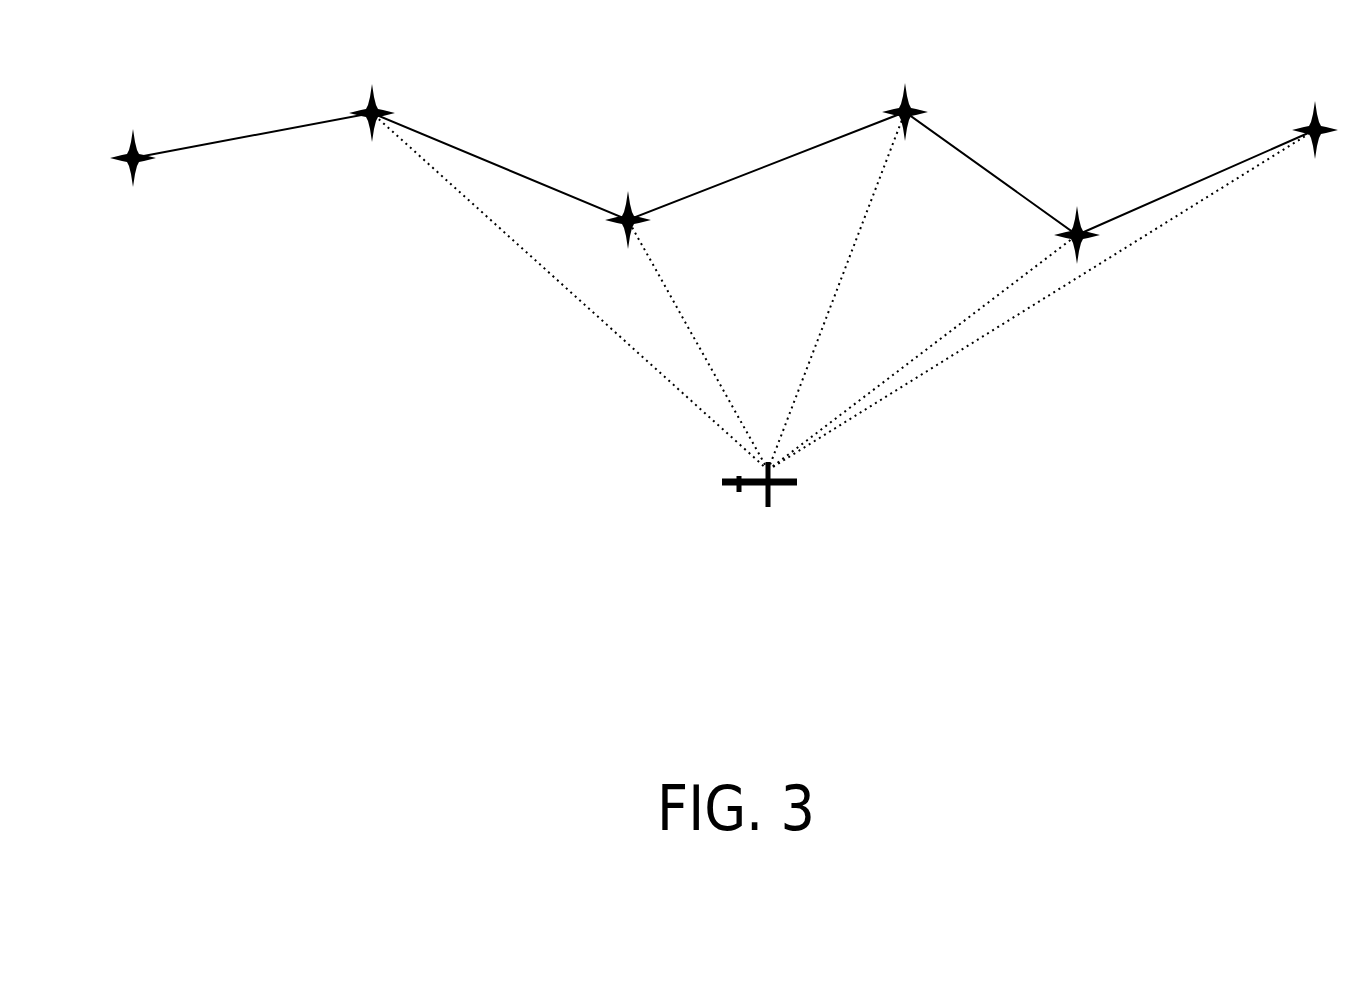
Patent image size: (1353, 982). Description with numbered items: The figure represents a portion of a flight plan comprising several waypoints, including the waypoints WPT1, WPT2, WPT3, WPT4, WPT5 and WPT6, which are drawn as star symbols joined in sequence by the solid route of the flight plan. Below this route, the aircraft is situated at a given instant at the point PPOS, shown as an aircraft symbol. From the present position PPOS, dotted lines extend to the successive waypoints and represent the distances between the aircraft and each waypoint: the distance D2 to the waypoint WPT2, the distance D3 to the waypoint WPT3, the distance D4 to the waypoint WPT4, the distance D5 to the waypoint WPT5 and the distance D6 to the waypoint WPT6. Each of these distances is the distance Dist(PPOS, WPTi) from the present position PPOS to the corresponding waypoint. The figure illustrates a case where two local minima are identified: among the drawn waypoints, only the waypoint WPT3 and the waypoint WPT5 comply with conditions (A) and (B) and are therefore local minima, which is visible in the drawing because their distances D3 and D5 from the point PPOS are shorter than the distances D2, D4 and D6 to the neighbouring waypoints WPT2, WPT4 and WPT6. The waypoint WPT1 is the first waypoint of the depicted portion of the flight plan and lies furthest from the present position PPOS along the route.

The waypoint WPT1 is at (119, 138).
The waypoint WPT2 is at (371, 102).
The waypoint WPT3 is at (632, 196).
The waypoint WPT4 is at (912, 96).
The waypoint WPT5 is at (1089, 220).
The waypoint WPT6 is at (1309, 114).
The distance D2 is at (570, 291).
The distance D3 is at (698, 345).
The distance D4 is at (836, 291).
The distance D5 is at (922, 352).
The distance D6 is at (1041, 300).
The aircraft present position PPOS is at (775, 498).